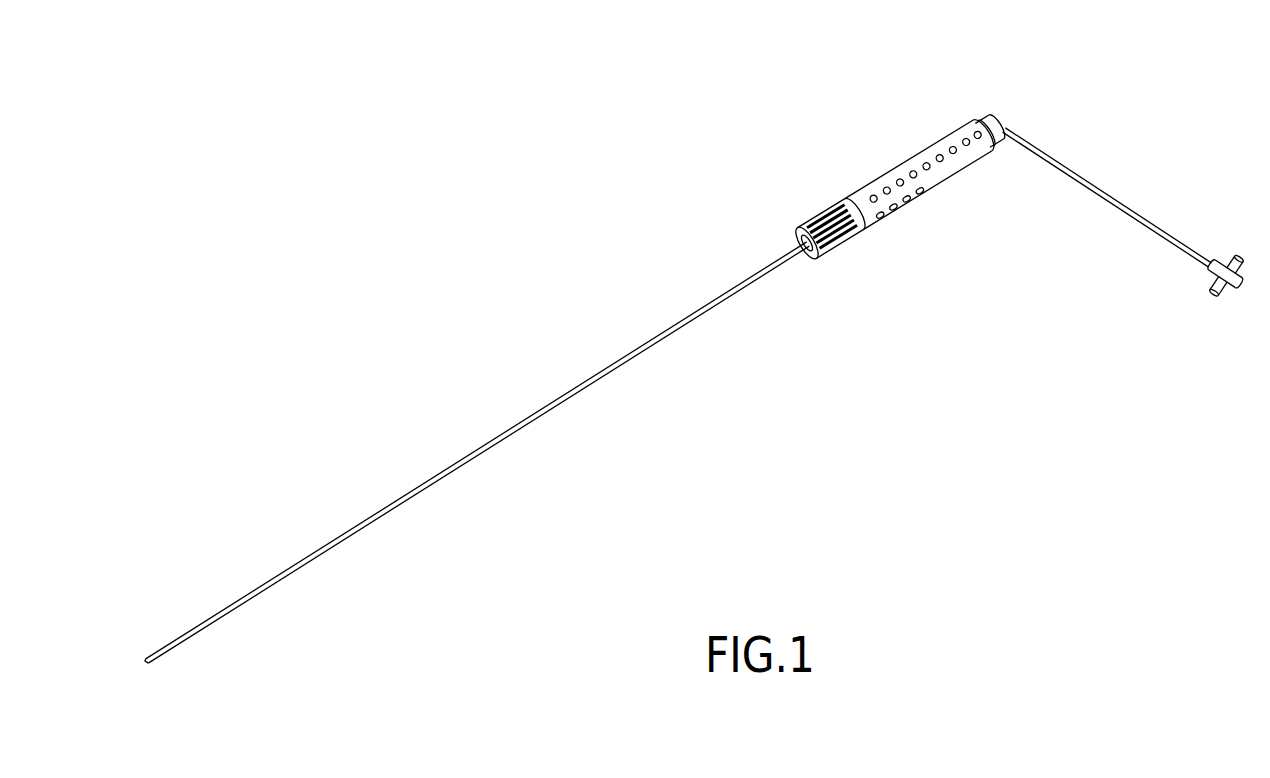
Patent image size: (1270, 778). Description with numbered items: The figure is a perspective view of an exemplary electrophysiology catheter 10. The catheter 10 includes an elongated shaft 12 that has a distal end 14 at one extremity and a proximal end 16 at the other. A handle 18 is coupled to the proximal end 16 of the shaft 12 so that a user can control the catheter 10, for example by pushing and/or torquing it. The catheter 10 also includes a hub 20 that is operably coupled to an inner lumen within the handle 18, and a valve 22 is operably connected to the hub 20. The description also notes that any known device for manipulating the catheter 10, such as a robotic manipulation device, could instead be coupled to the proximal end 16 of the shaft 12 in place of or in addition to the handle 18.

The electrophysiology catheter 10 is at (622, 230).
The shaft 12 is at (537, 418).
The distal end 14 is at (146, 667).
The proximal end 16 is at (807, 262).
The handle 18 is at (913, 170).
The hub 20 is at (1005, 118).
The valve 22 is at (1228, 302).